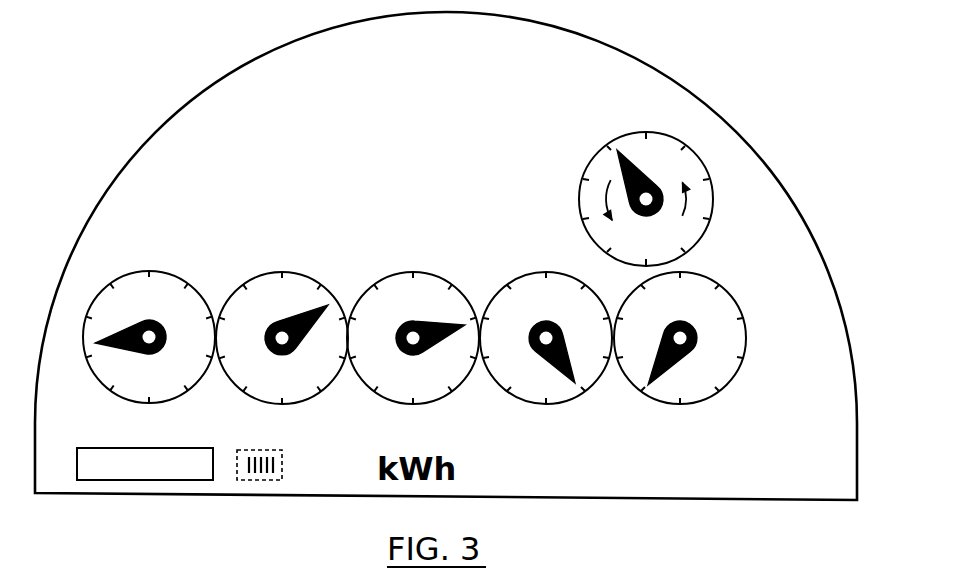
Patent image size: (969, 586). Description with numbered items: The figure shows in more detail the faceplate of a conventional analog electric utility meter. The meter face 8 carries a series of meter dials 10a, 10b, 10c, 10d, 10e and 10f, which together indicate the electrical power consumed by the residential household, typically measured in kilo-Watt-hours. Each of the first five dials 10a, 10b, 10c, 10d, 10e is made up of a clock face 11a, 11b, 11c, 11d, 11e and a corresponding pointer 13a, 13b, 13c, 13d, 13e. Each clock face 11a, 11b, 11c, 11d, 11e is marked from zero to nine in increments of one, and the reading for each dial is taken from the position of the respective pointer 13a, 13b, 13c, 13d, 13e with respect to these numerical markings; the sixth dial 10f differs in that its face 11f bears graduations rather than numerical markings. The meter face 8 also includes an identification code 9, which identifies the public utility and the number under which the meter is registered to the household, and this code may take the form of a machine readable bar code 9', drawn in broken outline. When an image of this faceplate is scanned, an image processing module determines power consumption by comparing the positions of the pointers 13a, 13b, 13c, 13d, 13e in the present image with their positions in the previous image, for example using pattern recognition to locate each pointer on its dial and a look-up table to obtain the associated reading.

The meter face 8 is at (637, 58).
The identification code 9 is at (132, 467).
The bar code 9' is at (292, 468).
The meter dial 10a is at (132, 327).
The meter dial 10b is at (286, 325).
The meter dial 10c is at (412, 325).
The meter dial 10d is at (544, 325).
The meter dial 10e is at (694, 338).
The meter dial 10f is at (668, 176).
The clock face 11a is at (133, 387).
The clock face 11b is at (267, 383).
The clock face 11c is at (398, 385).
The clock face 11d is at (532, 385).
The clock face 11e is at (712, 362).
The rotation direction arrows 11f is at (690, 168).
The pointer 13a is at (118, 348).
The pointer 13b is at (298, 317).
The pointer 13c is at (440, 320).
The pointer 13d is at (570, 364).
The pointer 13e is at (652, 365).